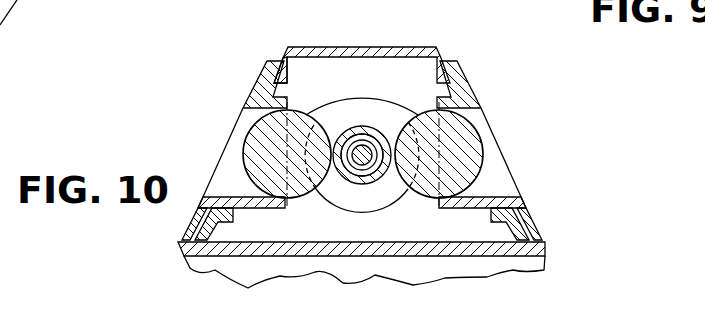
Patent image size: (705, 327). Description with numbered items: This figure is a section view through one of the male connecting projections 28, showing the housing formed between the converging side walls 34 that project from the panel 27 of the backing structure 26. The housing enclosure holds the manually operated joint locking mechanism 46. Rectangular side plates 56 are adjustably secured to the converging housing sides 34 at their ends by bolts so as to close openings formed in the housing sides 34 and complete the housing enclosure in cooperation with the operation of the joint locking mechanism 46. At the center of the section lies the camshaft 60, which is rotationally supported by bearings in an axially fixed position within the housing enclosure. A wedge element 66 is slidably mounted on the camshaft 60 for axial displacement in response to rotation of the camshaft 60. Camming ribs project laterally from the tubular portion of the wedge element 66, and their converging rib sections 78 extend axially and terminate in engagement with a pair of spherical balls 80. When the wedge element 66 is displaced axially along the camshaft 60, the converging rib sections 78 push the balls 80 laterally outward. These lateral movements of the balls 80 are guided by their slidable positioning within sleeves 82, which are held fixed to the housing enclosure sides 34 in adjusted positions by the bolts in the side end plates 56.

The backing structure 26 is at (546, 271).
The panel 27 is at (546, 243).
The male connecting projection 28 is at (230, 97).
The converging side walls 34 is at (292, 64).
The joint locking mechanism 46 is at (389, 73).
The rectangular side plates 56 is at (459, 68).
The camshaft 60 is at (345, 187).
The wedge element 66 is at (356, 95).
The converging rib section 78 is at (370, 186).
The spherical balls 80 is at (470, 150).
The sleeves 82 is at (490, 198).